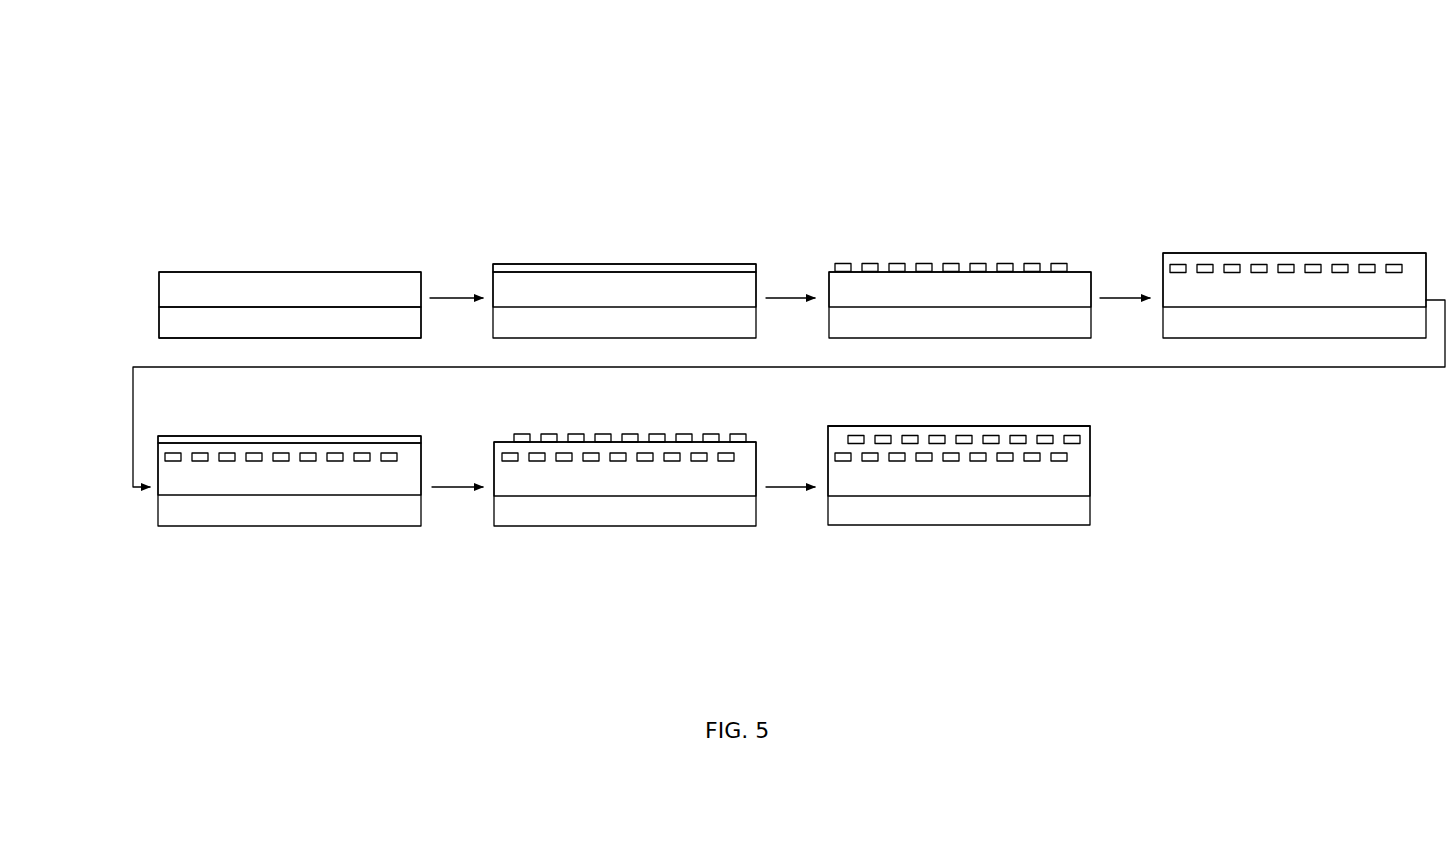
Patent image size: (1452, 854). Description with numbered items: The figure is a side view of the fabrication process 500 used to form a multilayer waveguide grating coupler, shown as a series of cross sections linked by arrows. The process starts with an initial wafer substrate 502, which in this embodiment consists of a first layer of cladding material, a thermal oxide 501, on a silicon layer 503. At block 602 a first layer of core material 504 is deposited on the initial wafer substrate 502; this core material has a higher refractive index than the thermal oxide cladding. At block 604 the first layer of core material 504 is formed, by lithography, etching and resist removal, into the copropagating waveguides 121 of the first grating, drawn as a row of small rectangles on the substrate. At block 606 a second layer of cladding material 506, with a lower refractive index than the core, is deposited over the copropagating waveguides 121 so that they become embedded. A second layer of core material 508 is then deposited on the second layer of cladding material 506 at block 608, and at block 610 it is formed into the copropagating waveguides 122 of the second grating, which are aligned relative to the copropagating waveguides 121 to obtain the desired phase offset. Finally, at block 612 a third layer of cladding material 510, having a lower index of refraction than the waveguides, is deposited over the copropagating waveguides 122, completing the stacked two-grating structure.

The fabrication process 500 is at (418, 112).
The thermal oxide 501 is at (253, 285).
The initial wafer substrate 502 is at (160, 291).
The silicon layer 503 is at (163, 320).
The first layer of core material 504 is at (670, 271).
The second layer of cladding material 506 is at (1188, 262).
The second layer of core material 508 is at (398, 436).
The third layer of cladding material 510 is at (1078, 431).
The copropagating waveguides 121 is at (1057, 264).
The copropagating waveguides 122 is at (711, 434).
The block 602 is at (588, 240).
The block 604 is at (930, 240).
The block 606 is at (1326, 236).
The block 608 is at (263, 540).
The block 610 is at (603, 540).
The block 612 is at (960, 540).